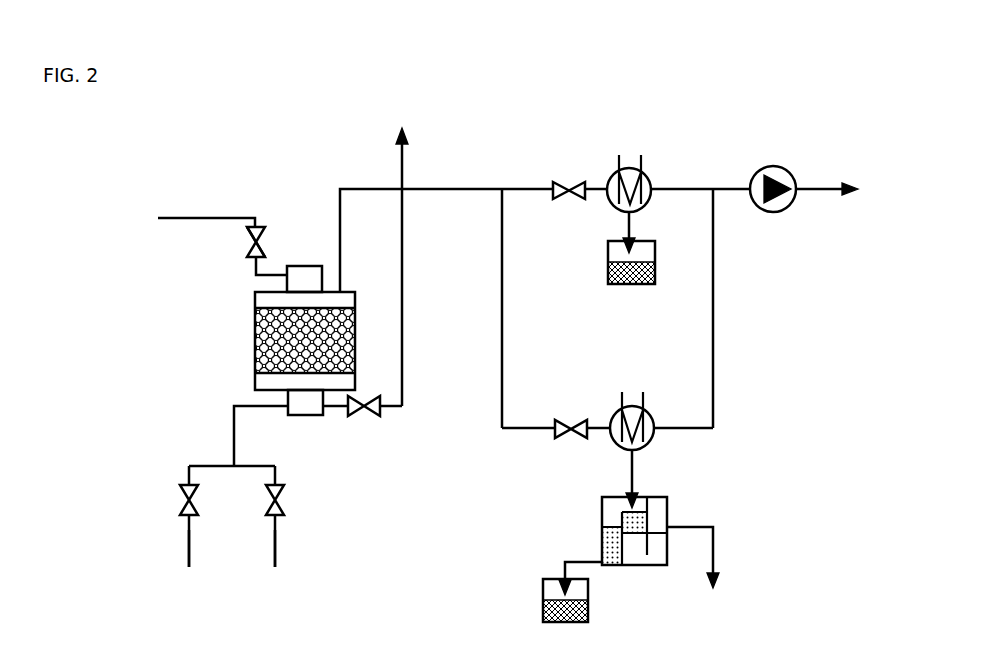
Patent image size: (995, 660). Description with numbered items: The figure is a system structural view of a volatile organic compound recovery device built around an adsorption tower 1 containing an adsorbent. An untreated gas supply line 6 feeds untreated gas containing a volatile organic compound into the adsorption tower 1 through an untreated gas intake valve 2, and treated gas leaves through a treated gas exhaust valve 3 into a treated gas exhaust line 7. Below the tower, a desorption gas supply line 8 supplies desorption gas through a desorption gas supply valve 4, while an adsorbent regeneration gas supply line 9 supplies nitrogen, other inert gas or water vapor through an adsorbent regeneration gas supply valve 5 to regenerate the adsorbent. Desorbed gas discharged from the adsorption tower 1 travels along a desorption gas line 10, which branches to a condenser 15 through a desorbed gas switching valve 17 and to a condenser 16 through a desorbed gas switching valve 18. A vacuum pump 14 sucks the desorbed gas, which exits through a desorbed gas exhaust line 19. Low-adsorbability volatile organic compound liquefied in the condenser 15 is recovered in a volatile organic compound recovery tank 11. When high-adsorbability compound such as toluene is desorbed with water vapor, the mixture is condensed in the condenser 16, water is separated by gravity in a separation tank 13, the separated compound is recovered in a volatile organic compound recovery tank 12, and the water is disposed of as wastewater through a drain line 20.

The adsorption tower 1 is at (255, 346).
The untreated gas intake valve 2 is at (247, 244).
The treated gas exhaust valve 3 is at (378, 420).
The desorption gas supply valve 4 is at (181, 502).
The adsorbent regeneration gas supply valve 5 is at (286, 494).
The untreated gas supply line 6 is at (191, 218).
The treated gas exhaust line 7 is at (402, 156).
The desorption gas supply line 8 is at (181, 546).
The adsorbent regeneration gas supply line 9 is at (277, 545).
The desorption gas line 10 is at (466, 187).
The volatile organic compound recovery tank 11 is at (608, 270).
The volatile organic compound recovery tank 12 is at (535, 608).
The separation tank 13 is at (602, 517).
The vacuum pump 14 is at (774, 166).
The condenser 15 is at (652, 181).
The condenser 16 is at (657, 424).
The desorbed gas switching valve 17 is at (563, 184).
The desorbed gas switching valve 18 is at (566, 418).
The desorbed gas exhaust line 19 is at (828, 184).
The drain line 20 is at (715, 551).